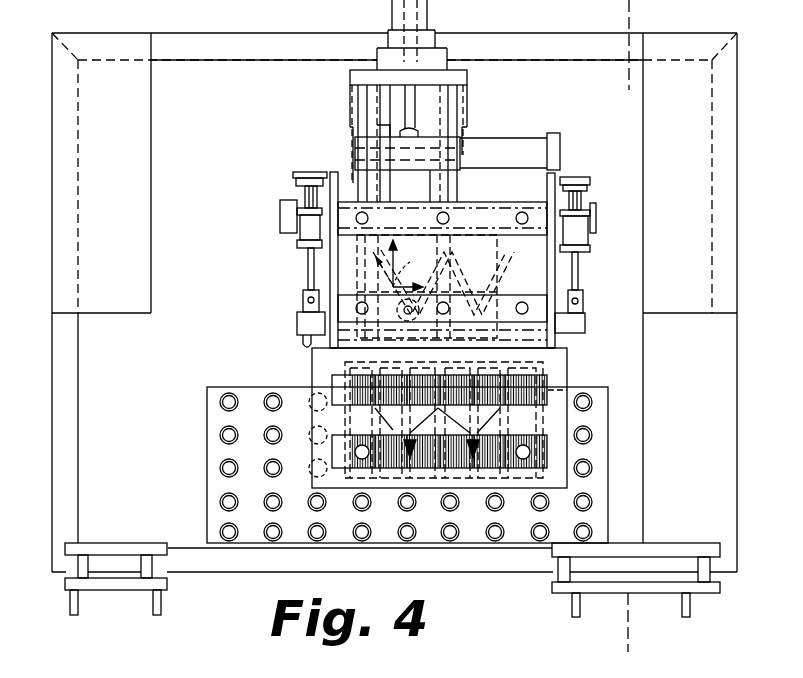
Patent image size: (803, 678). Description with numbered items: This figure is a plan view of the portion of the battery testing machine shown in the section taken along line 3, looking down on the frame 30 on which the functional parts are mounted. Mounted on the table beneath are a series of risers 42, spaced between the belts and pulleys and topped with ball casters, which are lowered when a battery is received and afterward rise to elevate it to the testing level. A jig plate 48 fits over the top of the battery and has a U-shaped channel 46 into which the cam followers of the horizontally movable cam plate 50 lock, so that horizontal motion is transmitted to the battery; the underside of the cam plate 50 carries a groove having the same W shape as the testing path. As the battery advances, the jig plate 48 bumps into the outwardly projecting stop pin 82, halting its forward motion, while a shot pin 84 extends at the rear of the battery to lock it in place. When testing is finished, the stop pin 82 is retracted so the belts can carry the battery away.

The frame 30 is at (75, 158).
The section line 3- 3 is at (628, 637).
The risers 42 is at (220, 465).
The U-shaped channel 46 is at (570, 352).
The jig plate 48 is at (565, 382).
The cam plate 50 is at (537, 283).
The stop pin 82 is at (582, 338).
The shot pin 84 is at (300, 343).